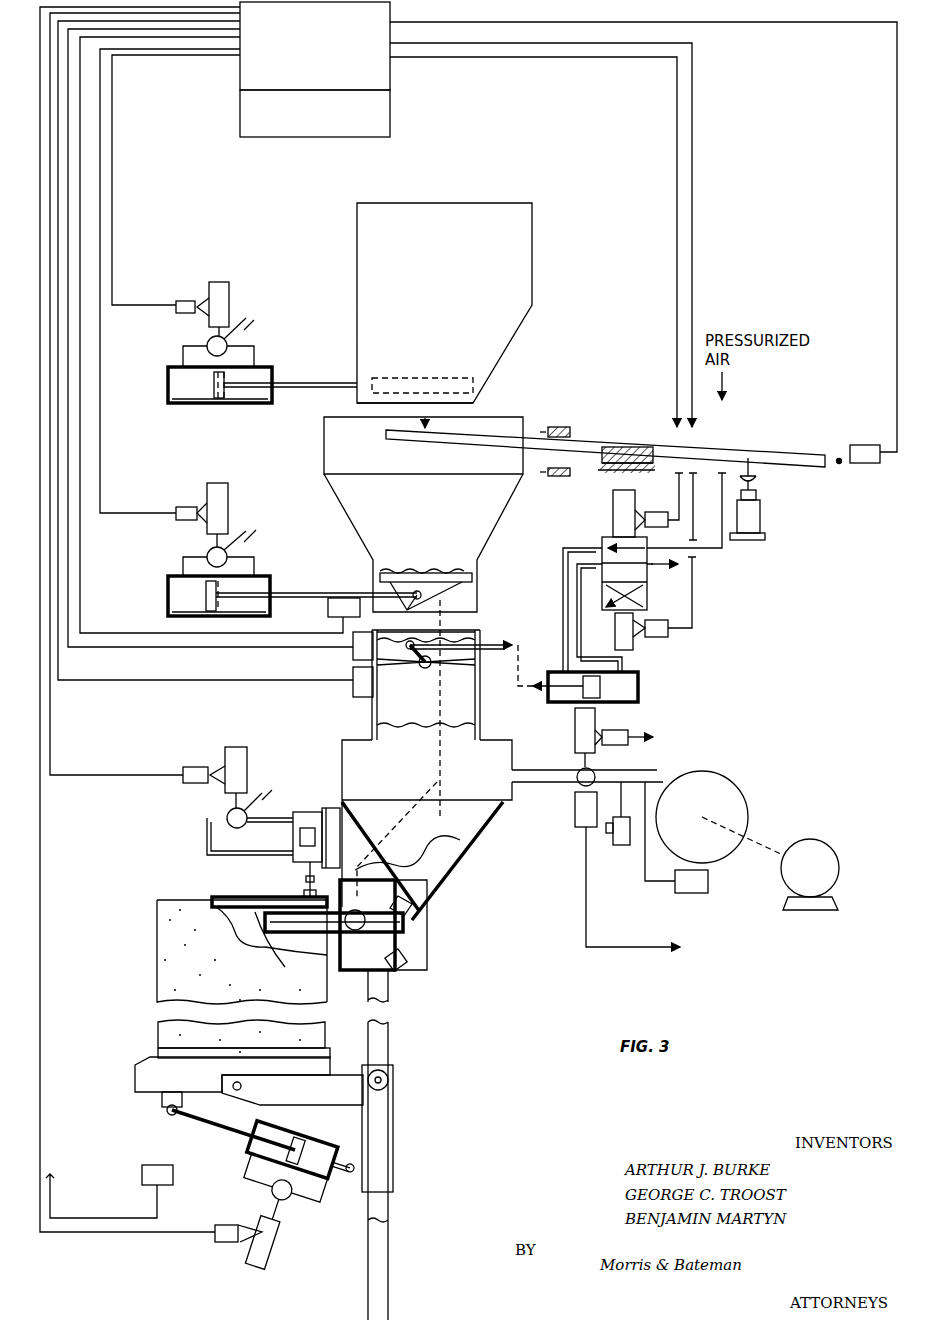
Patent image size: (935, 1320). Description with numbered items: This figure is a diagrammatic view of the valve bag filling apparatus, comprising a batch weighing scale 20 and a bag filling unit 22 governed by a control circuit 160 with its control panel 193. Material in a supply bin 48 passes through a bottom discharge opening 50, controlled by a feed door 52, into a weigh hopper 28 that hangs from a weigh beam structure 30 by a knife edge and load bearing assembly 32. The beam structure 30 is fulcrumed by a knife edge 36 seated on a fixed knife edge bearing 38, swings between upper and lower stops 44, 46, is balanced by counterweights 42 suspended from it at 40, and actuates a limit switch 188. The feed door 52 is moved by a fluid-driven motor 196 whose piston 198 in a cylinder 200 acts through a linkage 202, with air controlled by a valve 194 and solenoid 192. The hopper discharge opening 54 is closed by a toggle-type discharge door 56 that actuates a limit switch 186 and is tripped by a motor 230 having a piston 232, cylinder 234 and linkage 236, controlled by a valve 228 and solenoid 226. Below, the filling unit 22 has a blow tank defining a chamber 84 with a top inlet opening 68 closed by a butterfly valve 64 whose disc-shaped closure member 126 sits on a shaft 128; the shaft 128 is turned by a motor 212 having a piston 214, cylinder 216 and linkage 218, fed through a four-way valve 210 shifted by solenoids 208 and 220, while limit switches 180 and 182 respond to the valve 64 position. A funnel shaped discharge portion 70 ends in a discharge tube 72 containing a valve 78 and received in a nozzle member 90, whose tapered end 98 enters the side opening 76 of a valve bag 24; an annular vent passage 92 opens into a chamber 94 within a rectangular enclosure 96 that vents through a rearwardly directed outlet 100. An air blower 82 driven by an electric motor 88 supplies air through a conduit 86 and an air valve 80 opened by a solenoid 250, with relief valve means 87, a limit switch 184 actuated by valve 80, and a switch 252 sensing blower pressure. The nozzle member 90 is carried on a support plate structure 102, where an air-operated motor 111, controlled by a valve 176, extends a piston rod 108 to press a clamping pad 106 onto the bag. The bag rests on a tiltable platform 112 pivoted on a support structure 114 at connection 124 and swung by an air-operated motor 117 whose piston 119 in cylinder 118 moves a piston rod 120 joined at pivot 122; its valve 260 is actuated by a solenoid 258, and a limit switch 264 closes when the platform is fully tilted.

The control circuit 160 is at (390, 77).
The control panel 193 is at (390, 115).
The supply bin 48 is at (457, 266).
The feed door 52 is at (442, 378).
The bottom discharge opening 50 is at (472, 403).
The solenoid 192 is at (229, 310).
The valve 194 is at (210, 338).
The fluid-driven motor 196 is at (166, 391).
The piston 198 is at (228, 377).
The cylinder 200 is at (193, 404).
The linkage 202 is at (290, 388).
The scale 20 is at (316, 446).
The weigh hopper 28 is at (324, 466).
The weigh beam structure 30 is at (400, 441).
The knife edge and load bearing assembly 32 is at (428, 418).
The upper stop 44 is at (572, 434).
The knife edge 36 is at (628, 447).
The knife edge bearing 38 is at (640, 473).
The adjustable pivot 40 is at (750, 460).
The counterweights 42 is at (762, 516).
The lower stop 46 is at (572, 474).
The limit switch 188 is at (866, 463).
The solenoid 220 is at (613, 511).
The four-way valve 210 is at (645, 590).
The solenoid 208 is at (633, 646).
The fluid-driven motor 212 is at (642, 686).
The piston 214 is at (585, 691).
The cylinder 216 is at (628, 703).
The motion transmitting linkage 218 is at (533, 675).
The solenoid 226 is at (233, 477).
The valve 228 is at (207, 552).
The fluid-driven motor 230 is at (273, 577).
The piston 232 is at (205, 592).
The cylinder 234 is at (180, 616).
The motion transmitting linkage 236 is at (345, 593).
The limit switch 186 is at (328, 609).
The discharge door 56 is at (474, 582).
The discharge opening 54 is at (420, 613).
The top inlet opening 68 is at (378, 634).
The limit switch 180 is at (353, 653).
The limit switch 182 is at (353, 689).
The butterfly valve 64 is at (392, 672).
The shaft 128 is at (425, 670).
The disc-shaped closure member 126 is at (458, 668).
The solenoid 250 is at (575, 735).
The air valve 80 is at (576, 769).
The air delivery conduit 86 is at (654, 764).
The air blower 82 is at (723, 776).
The electric motor 88 is at (806, 843).
The limit switch 184 is at (575, 806).
The relief valve means 87 is at (621, 848).
The switch 252 is at (687, 893).
The pivot connection 124 is at (247, 773).
The support plate structure 102 is at (335, 795).
The air-operated motor 111 is at (303, 808).
The valve 176 is at (207, 838).
The clamping pad 106 is at (305, 895).
The piston rod 108 is at (310, 880).
The side opening 76 is at (330, 905).
The valve 78 is at (357, 912).
The bag filling unit 22 is at (498, 838).
The chamber 84 is at (438, 836).
The funnel shaped lower discharge portion 70 is at (470, 860).
The chamber 94 is at (400, 937).
The rearwardly directed outlet 100 is at (406, 960).
The valve bag 24 is at (157, 946).
The annular vent passage 92 is at (290, 931).
The discharge tube 72 is at (300, 934).
The tapered end 98 is at (243, 938).
The nozzle member 90 is at (293, 963).
The rectangular enclosure 96 is at (356, 970).
The tiltable platform 112 is at (135, 1075).
The support structure 114 is at (393, 1090).
The cylinder 118 is at (272, 1136).
The piston 119 is at (306, 1144).
The pivot connection 122 is at (166, 1162).
The piston rod 120 is at (226, 1140).
The air-operated motor 117 is at (243, 1175).
The limit switch 264 is at (142, 1178).
The valve 260 is at (287, 1200).
The solenoid 258 is at (272, 1258).